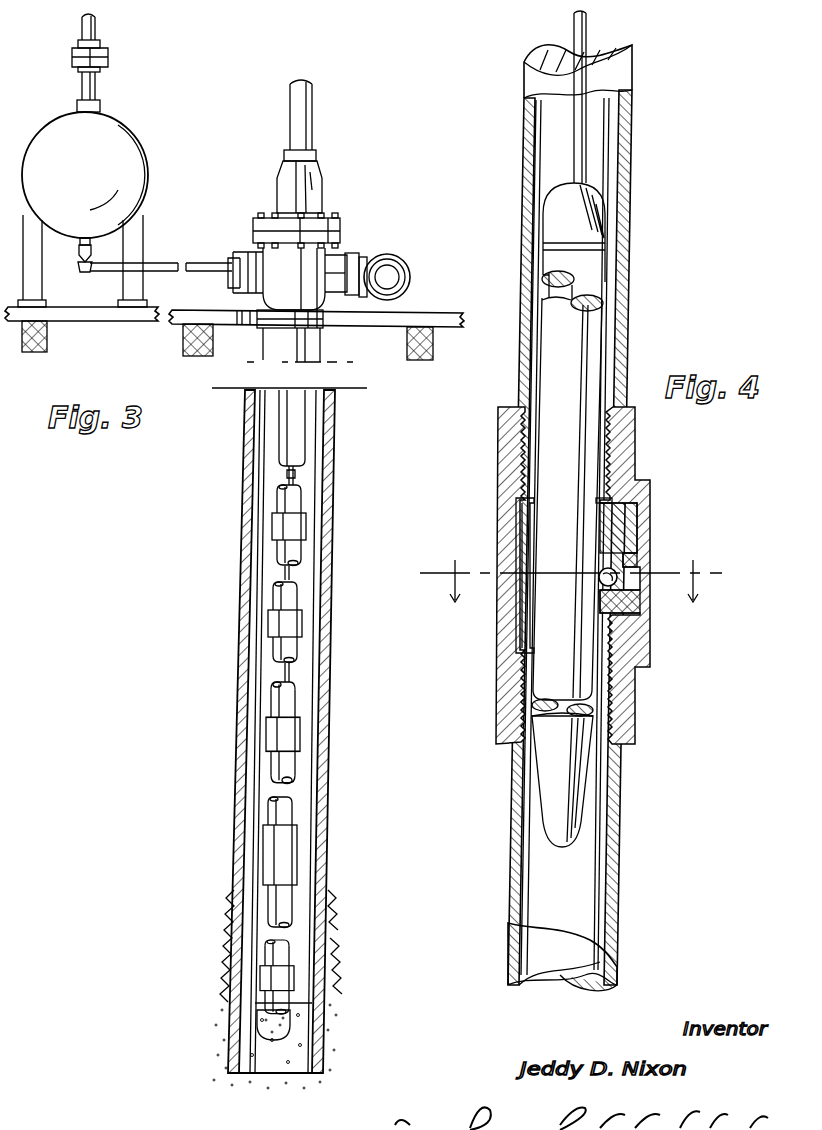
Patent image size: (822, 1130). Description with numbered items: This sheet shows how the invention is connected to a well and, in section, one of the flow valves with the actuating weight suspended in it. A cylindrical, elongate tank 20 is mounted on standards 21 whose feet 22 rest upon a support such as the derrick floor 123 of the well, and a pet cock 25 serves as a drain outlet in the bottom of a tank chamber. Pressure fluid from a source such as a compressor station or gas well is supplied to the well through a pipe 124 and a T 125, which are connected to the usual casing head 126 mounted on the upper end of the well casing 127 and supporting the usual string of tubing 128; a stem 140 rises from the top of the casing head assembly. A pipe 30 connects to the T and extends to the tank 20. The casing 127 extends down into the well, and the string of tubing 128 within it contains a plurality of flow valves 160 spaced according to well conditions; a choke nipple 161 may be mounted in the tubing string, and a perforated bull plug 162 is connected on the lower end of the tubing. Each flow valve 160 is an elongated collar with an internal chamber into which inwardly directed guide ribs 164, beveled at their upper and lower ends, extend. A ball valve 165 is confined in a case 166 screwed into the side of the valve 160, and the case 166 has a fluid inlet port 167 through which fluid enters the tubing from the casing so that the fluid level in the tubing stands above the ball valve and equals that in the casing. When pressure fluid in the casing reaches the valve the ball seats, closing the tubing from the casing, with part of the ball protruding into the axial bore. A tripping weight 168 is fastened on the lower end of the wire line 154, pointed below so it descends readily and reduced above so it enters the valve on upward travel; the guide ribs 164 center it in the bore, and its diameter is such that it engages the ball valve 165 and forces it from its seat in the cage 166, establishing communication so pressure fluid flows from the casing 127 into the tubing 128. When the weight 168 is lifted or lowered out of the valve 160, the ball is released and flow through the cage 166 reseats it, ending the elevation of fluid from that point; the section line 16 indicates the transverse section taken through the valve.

In FIG. 3, the tank 20 is at (130, 155).
In FIG. 3, the standards 21 is at (131, 282).
In FIG. 3, the feet 22 is at (142, 306).
In FIG. 3, the pet cock 25 is at (80, 268).
In FIG. 3, the pipe 30 is at (155, 264).
In FIG. 3, the derrick floor 123 is at (440, 345).
In FIG. 3, the pipe 124 is at (411, 276).
In FIG. 3, the T 125 is at (365, 258).
In FIG. 3, the casing head 126 is at (248, 250).
In FIG. 3, the well casing 127 is at (248, 515).
In FIG. 3, the string of tubing 128 is at (296, 505).
In FIG. 4, the string of tubing 128 is at (622, 165).
In FIG. 3, the stem 140 is at (300, 137).
In FIG. 3, the wire line 154 is at (292, 478).
In FIG. 4, the wire line 154 is at (578, 130).
In FIG. 3, the flow valve 160 is at (278, 625).
In FIG. 4, the flow valve 160 is at (512, 500).
In FIG. 3, the choke nipple 161 is at (285, 855).
In FIG. 3, the perforated bull plug 162 is at (270, 1025).
In FIG. 4, the guide ribs 164 is at (615, 540).
In FIG. 4, the ball valve 165 is at (630, 558).
In FIG. 4, the case 166 is at (632, 596).
In FIG. 4, the fluid inlet port 167 is at (617, 577).
In FIG. 4, the tripping weight 168 is at (583, 330).
In FIG. 4, the section line 16 is at (573, 581).